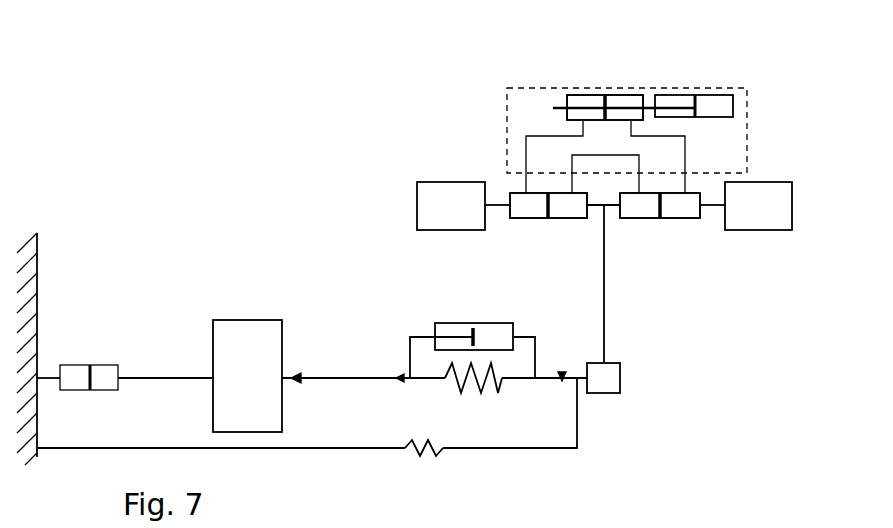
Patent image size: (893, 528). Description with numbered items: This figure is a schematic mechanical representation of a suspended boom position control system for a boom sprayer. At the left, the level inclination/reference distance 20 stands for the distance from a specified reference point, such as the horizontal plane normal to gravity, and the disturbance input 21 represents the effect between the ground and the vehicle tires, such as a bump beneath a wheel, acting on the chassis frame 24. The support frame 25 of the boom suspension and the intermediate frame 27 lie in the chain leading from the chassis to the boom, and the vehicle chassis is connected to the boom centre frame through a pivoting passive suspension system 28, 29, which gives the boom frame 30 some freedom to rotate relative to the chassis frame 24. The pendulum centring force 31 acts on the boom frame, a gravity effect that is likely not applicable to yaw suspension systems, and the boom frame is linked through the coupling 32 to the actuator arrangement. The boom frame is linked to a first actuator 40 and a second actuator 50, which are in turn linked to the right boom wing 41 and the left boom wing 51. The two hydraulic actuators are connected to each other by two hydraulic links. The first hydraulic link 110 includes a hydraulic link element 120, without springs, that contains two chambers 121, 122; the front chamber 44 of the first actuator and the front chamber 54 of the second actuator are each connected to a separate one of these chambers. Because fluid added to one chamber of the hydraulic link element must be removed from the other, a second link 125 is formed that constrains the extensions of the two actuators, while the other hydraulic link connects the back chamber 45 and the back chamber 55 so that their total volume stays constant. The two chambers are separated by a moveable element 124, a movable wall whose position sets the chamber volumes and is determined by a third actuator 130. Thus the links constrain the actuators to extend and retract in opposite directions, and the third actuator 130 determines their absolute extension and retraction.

The level inclination/reference distance 20 is at (40, 263).
The disturbance input 21 is at (93, 363).
The chassis frame 24 is at (247, 376).
The support frame 25 is at (295, 377).
The intermediate frame 27 is at (398, 381).
The pivoting passive suspension system 28 is at (488, 387).
The pivoting passive suspension system 29 is at (502, 314).
The boom frame 30 is at (562, 374).
The pendulum centring force 31 is at (433, 455).
The coupling block 32 is at (608, 382).
The first actuator 40 is at (555, 220).
The right boom wing 41 is at (451, 206).
The front chamber 44 is at (518, 217).
The back chamber 45 is at (577, 219).
The second actuator 50 is at (683, 219).
The left boom wing 51 is at (758, 206).
The front chamber 54 is at (670, 219).
The back chamber 55 is at (635, 219).
The first hydraulic link 110 is at (525, 142).
The hydraulic link element 120 is at (617, 93).
The chamber 121 is at (578, 96).
The chamber 122 is at (637, 101).
The moveable element 124 is at (600, 93).
The second link 125 is at (600, 157).
The third actuator 130 is at (722, 117).